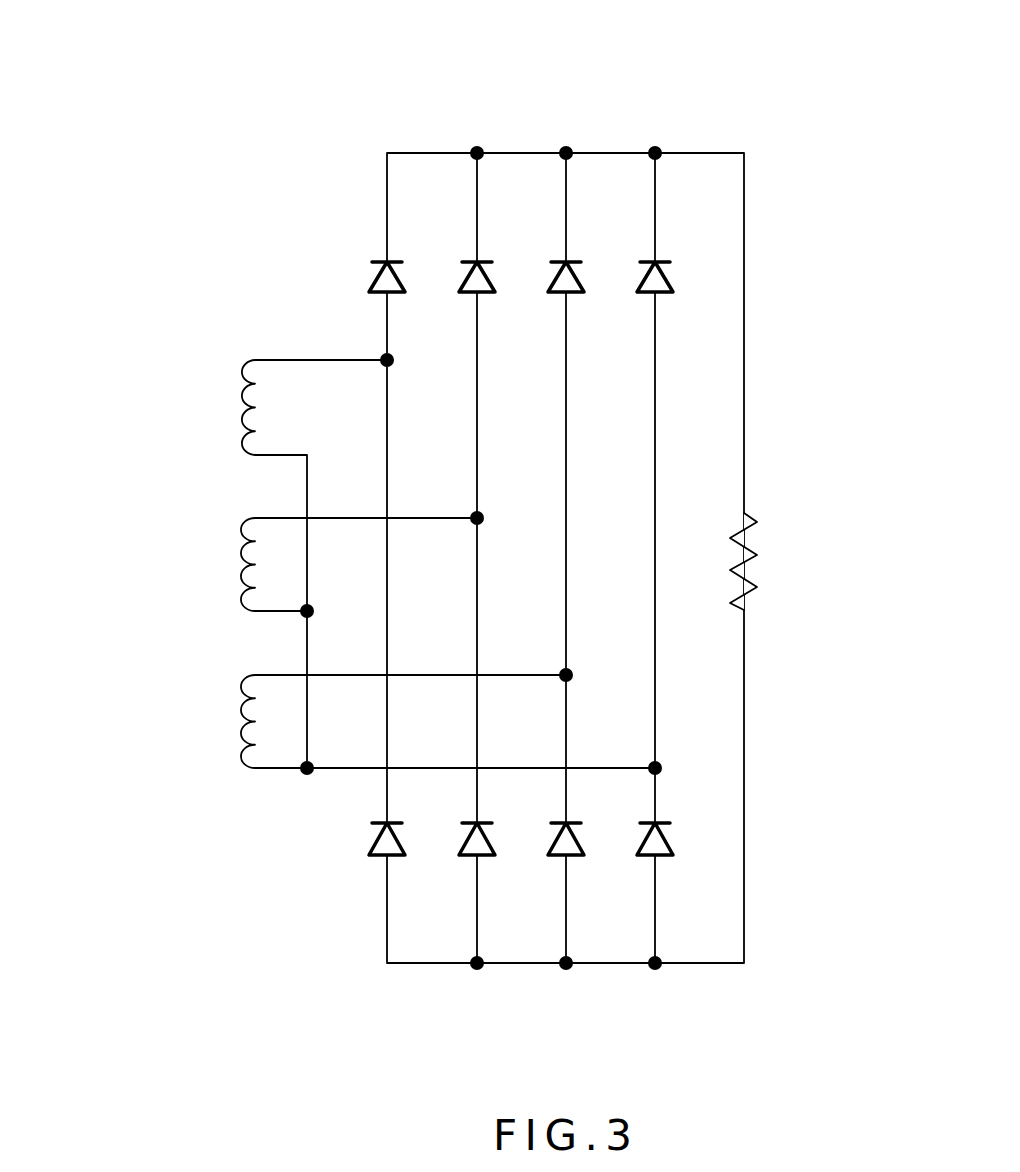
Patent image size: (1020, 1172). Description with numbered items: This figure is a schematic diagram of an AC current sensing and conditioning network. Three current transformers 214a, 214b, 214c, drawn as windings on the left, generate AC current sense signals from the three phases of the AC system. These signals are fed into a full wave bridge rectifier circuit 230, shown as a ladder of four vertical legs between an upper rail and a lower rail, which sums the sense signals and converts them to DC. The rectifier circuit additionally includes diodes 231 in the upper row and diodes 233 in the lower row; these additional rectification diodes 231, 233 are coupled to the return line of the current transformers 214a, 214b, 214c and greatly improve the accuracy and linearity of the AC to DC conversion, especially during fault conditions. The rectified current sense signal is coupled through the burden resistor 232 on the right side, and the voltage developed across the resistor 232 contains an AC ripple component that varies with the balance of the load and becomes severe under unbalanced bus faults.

The full wave bridge rectifier circuit 230 is at (506, 110).
The diode 231 is at (667, 276).
The burden resistor 232 is at (745, 516).
The diode 233 is at (667, 838).
The current transformer (CT) 214a is at (238, 363).
The current transformer (CT) 214b is at (238, 520).
The current transformer (CT) 214c is at (238, 678).